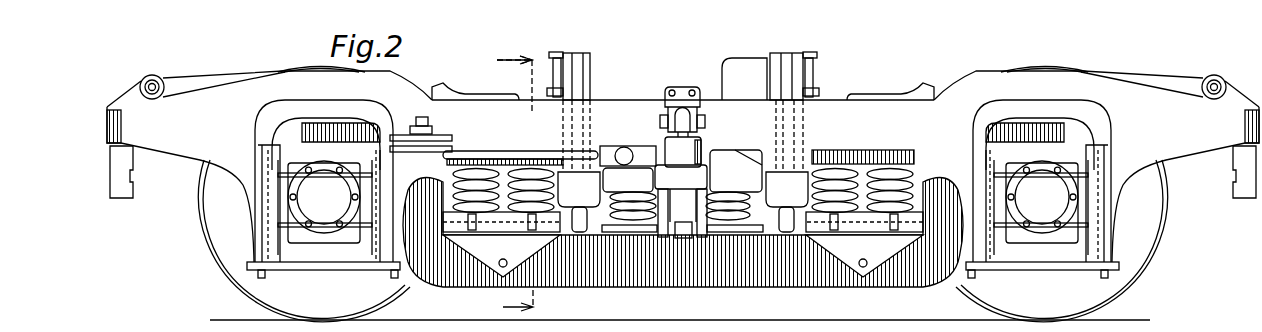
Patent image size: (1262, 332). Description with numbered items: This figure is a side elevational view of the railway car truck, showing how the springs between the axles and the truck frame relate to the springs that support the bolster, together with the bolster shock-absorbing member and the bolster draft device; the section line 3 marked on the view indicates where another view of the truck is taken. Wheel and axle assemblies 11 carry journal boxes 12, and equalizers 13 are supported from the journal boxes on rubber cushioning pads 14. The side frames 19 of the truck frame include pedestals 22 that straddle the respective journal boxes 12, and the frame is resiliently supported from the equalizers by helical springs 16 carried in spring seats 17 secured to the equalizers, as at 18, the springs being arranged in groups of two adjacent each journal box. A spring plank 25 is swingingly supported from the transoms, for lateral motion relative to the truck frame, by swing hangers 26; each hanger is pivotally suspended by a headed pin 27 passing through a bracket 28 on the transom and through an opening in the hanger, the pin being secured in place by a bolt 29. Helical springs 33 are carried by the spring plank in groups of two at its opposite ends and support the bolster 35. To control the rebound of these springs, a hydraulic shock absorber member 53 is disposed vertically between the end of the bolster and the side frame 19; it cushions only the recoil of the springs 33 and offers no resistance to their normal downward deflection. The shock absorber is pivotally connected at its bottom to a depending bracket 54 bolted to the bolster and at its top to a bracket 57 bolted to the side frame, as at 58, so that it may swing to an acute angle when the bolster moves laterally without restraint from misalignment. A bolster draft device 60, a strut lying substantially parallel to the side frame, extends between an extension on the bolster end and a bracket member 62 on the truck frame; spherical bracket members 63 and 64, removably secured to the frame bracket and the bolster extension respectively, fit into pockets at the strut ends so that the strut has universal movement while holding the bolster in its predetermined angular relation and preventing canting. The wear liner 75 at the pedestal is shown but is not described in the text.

The section line 3- 3 is at (506, 181).
The wheel and axle assembly 11 is at (236, 286).
The journal box 12 is at (277, 220).
The equalizer 13 is at (640, 290).
The rubber cushioning pad 14 is at (300, 145).
The helical spring 16 is at (518, 172).
The spring seat 17 is at (513, 230).
The spring seat securement 18 is at (503, 267).
The side frame 19 is at (977, 76).
The pedestal 22 is at (252, 193).
The spring plank 25 is at (738, 228).
The swing hanger 26 is at (583, 90).
The headed pin 27 is at (556, 72).
The bracket 28 is at (592, 55).
The bolt 29 is at (556, 52).
The helical spring 33 is at (717, 213).
The bolster 35 is at (727, 168).
The hydraulic shock absorber member 53 is at (703, 137).
The depending bracket 54 is at (662, 235).
The bracket 57 is at (669, 103).
The bolted connection 58 is at (672, 87).
The bolster draft device 60 is at (478, 150).
The bracket member 62 is at (405, 137).
The spherical bracket member 63 is at (425, 142).
The spherical bracket member 64 is at (623, 147).
The pedestal wear liner 75 is at (262, 158).